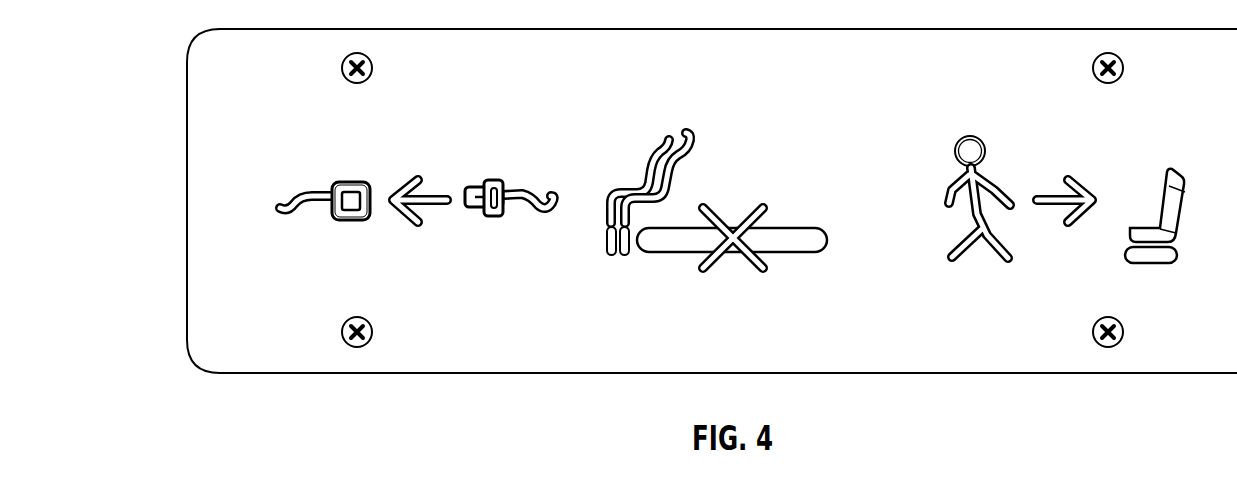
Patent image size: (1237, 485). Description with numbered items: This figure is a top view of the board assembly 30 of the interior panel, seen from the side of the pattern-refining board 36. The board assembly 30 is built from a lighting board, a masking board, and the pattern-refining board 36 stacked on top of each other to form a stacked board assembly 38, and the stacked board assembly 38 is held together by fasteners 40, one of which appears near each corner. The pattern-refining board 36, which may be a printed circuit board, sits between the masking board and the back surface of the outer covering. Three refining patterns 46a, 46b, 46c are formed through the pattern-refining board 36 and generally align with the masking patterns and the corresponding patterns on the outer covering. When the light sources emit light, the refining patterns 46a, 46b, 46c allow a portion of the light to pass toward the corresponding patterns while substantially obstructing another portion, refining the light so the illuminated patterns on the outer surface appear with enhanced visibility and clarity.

The board assembly 30 is at (202, 152).
The pattern-refining board 36 is at (510, 357).
The stacked board assembly 38 is at (202, 200).
The fastener 40 is at (342, 70).
The refining pattern 46a is at (401, 167).
The refining pattern 46b is at (736, 168).
The refining pattern 46c is at (1092, 172).